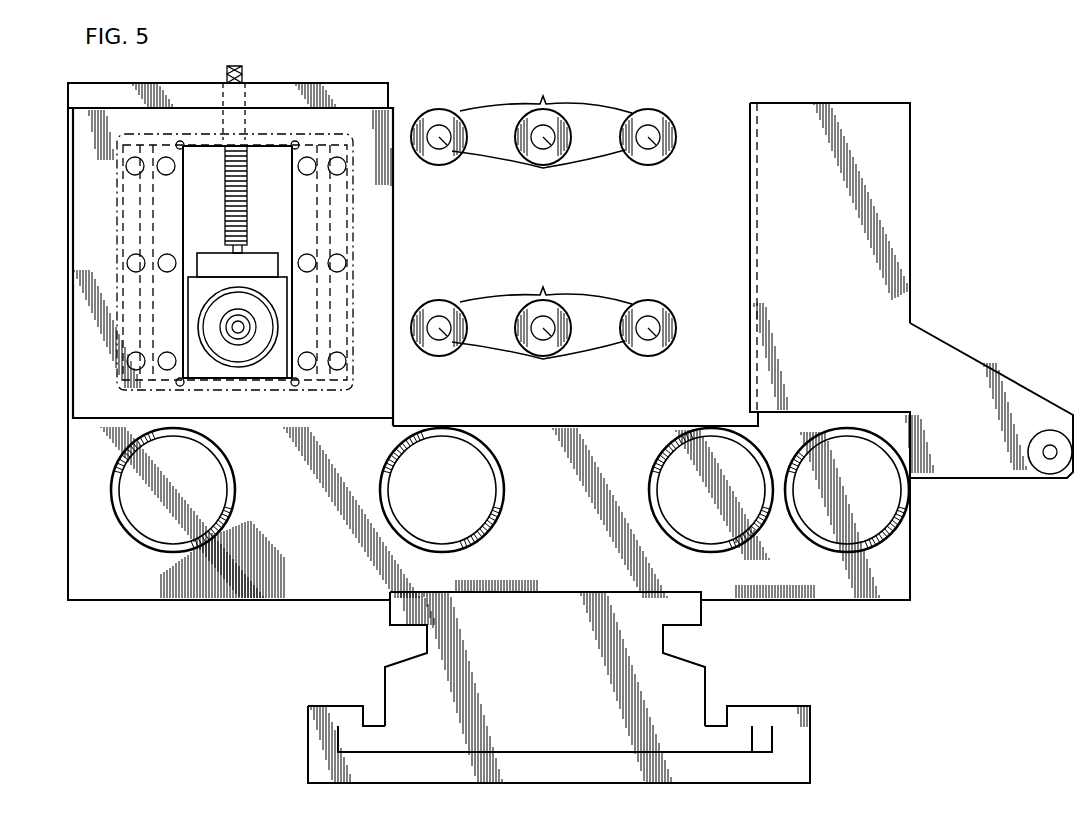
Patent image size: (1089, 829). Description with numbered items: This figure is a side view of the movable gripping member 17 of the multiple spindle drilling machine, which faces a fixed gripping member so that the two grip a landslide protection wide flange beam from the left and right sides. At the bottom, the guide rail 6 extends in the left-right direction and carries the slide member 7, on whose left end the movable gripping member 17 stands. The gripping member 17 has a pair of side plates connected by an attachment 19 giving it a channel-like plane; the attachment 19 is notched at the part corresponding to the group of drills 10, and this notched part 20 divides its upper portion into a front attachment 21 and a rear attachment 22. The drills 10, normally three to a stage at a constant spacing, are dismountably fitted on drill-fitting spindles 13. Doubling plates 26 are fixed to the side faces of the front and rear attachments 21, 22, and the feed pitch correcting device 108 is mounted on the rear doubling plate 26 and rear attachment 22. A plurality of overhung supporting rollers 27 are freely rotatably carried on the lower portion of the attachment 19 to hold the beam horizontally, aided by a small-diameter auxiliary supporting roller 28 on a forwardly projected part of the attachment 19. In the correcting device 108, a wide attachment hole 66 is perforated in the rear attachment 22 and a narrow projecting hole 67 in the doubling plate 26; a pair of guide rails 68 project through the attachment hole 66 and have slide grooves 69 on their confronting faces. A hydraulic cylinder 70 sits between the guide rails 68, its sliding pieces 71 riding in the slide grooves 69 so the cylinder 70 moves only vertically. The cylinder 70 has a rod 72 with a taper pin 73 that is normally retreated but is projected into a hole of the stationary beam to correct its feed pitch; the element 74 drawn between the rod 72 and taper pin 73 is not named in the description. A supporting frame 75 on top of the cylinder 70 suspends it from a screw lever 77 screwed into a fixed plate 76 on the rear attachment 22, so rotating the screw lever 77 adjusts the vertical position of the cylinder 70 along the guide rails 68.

The rear attachment 22 is at (68, 245).
The fixed plate 76 is at (200, 92).
The feed pitch correcting device 108 is at (242, 72).
The doubling plate 26 is at (393, 245).
The projecting hole 67 is at (208, 150).
The slide grooves 69 is at (155, 208).
The guide rails 68 is at (153, 188).
The sliding pieces 71 is at (168, 254).
The attachment hole 66 is at (252, 140).
The screw lever 77 is at (243, 176).
The hydraulic cylinder 70 is at (270, 281).
The supporting frame 75 is at (203, 255).
The rod 72 is at (246, 292).
The bearing 74 is at (227, 343).
The taper pin 73 is at (242, 337).
The drill-fitting spindles 13 is at (543, 112).
The drills 10 is at (547, 142).
The attachment 19 is at (646, 434).
The front attachment 21 is at (855, 110).
The movable gripping member 17 is at (783, 103).
The notched part 20 is at (750, 143).
The auxiliary supporting roller 28 is at (1050, 474).
The supporting rollers 27 is at (205, 528).
The slide member 7 is at (699, 690).
The guide rail 6 is at (810, 745).